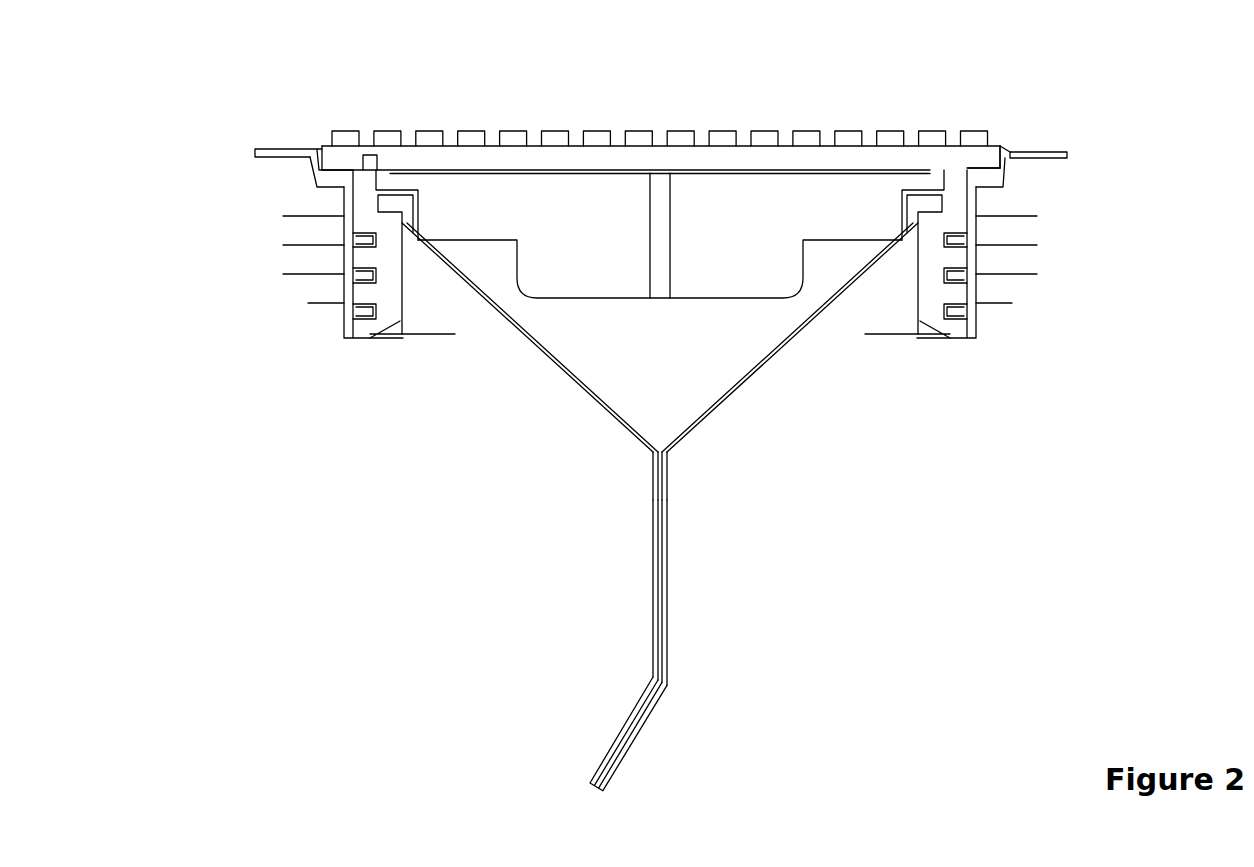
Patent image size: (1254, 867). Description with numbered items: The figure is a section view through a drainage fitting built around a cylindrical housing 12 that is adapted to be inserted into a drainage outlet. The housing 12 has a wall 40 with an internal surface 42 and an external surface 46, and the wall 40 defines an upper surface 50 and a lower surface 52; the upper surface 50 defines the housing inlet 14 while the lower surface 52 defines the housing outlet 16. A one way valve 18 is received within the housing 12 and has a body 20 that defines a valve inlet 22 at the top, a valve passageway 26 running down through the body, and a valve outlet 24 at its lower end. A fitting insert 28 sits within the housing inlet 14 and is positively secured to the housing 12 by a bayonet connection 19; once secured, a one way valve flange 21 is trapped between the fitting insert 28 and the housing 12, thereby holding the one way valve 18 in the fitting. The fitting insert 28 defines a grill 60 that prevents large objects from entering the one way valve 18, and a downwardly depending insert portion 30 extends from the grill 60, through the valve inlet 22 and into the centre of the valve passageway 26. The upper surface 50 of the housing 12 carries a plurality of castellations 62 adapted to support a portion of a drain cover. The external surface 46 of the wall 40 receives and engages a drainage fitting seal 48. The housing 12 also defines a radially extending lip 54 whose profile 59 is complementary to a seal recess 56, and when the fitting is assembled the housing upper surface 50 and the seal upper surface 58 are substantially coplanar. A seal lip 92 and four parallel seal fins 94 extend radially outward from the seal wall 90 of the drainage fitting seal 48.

The housing 12 is at (358, 185).
The housing inlet 14 is at (492, 144).
The housing outlet 16 is at (435, 335).
The one way valve 18 is at (668, 594).
The bayonet connection 19 is at (370, 155).
The body 20 is at (650, 448).
The one way valve flange 21 is at (387, 210).
The valve inlet 22 is at (836, 195).
The valve outlet 24 is at (595, 793).
The valve passageway 26 is at (668, 460).
The fitting insert 28 is at (622, 130).
The insert portion 30 is at (727, 290).
The wall 40 is at (358, 293).
The internal surface 42 is at (917, 313).
The external surface 46 is at (980, 320).
The drainage fitting seal 48 is at (958, 308).
The upper surface 50 is at (980, 143).
The lower surface 52 is at (940, 330).
The lip 54 is at (1000, 148).
The seal recess 56 is at (1006, 172).
The seal upper surface 58 is at (292, 149).
The profile 59 is at (1008, 167).
The grill 60 is at (580, 160).
The castellations 62 is at (806, 131).
The seal wall 90 is at (345, 229).
The seal lip 92 is at (258, 157).
The seal fins 94 is at (1023, 218).